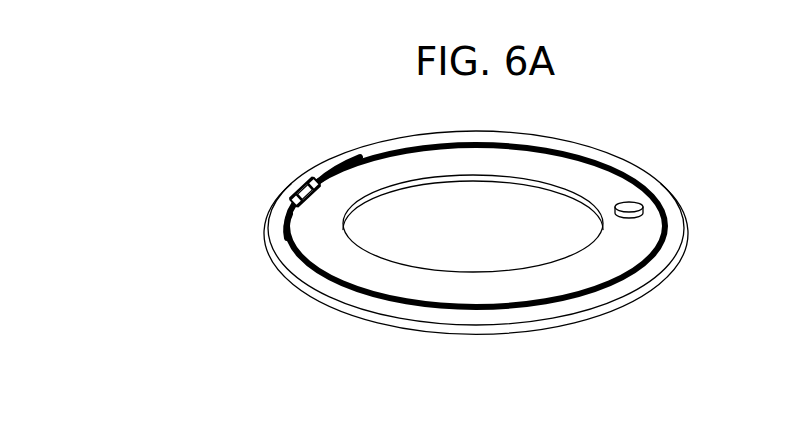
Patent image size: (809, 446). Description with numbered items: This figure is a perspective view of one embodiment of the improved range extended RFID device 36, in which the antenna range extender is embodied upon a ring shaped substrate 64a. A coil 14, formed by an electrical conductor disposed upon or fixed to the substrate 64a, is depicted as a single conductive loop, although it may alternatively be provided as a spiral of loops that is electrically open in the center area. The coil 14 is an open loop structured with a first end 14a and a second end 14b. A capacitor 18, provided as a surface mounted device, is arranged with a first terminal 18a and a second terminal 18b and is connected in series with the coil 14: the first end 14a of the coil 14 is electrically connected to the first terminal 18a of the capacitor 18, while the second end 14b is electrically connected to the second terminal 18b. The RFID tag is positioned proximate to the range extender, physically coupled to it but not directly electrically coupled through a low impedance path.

The range extended RFID device 36 is at (320, 341).
The ring shaped substrate 64a is at (335, 236).
The open-loop coil 14 is at (575, 297).
The first end of the coil 14a is at (321, 178).
The second end of the coil 14b is at (280, 232).
The capacitor 18 is at (302, 198).
The first terminal of the capacitor 18a is at (315, 187).
The second terminal of the capacitor 18b is at (291, 201).